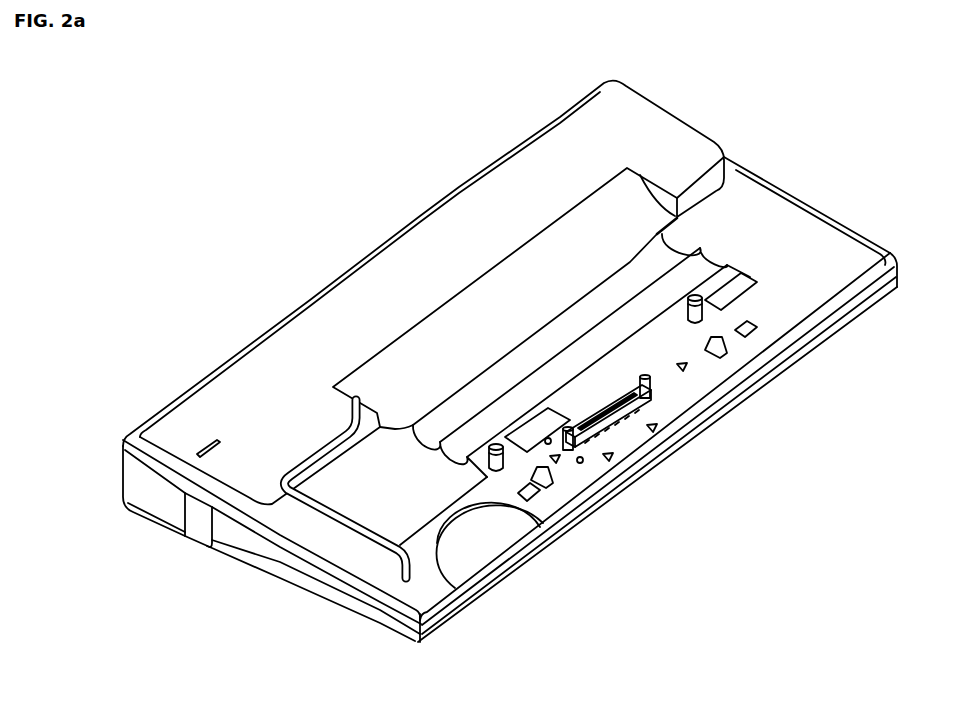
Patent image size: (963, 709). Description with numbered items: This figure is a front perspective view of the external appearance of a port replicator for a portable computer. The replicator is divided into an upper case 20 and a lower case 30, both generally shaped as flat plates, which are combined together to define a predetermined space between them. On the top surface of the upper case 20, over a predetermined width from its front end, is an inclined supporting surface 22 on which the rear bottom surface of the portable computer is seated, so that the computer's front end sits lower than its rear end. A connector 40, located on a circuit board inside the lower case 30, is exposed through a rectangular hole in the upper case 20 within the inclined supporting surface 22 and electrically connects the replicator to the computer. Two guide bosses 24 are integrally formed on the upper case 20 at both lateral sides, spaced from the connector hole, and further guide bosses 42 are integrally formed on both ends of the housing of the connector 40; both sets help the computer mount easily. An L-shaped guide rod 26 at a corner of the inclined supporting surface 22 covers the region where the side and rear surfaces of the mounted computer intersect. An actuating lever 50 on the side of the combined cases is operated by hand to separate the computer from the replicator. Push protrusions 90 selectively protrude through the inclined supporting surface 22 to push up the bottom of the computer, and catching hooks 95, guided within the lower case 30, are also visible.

The upper case 20 is at (273, 543).
The inclined supporting surface 22 is at (890, 247).
The guide boss 24 is at (495, 472).
The guide rod 26 is at (348, 522).
The lower case 30 is at (230, 549).
The connector 40 is at (612, 423).
The guide boss 42 is at (650, 400).
The actuating lever 50 is at (163, 508).
The push protrusion 90 is at (534, 500).
The catching hook 95 is at (552, 483).